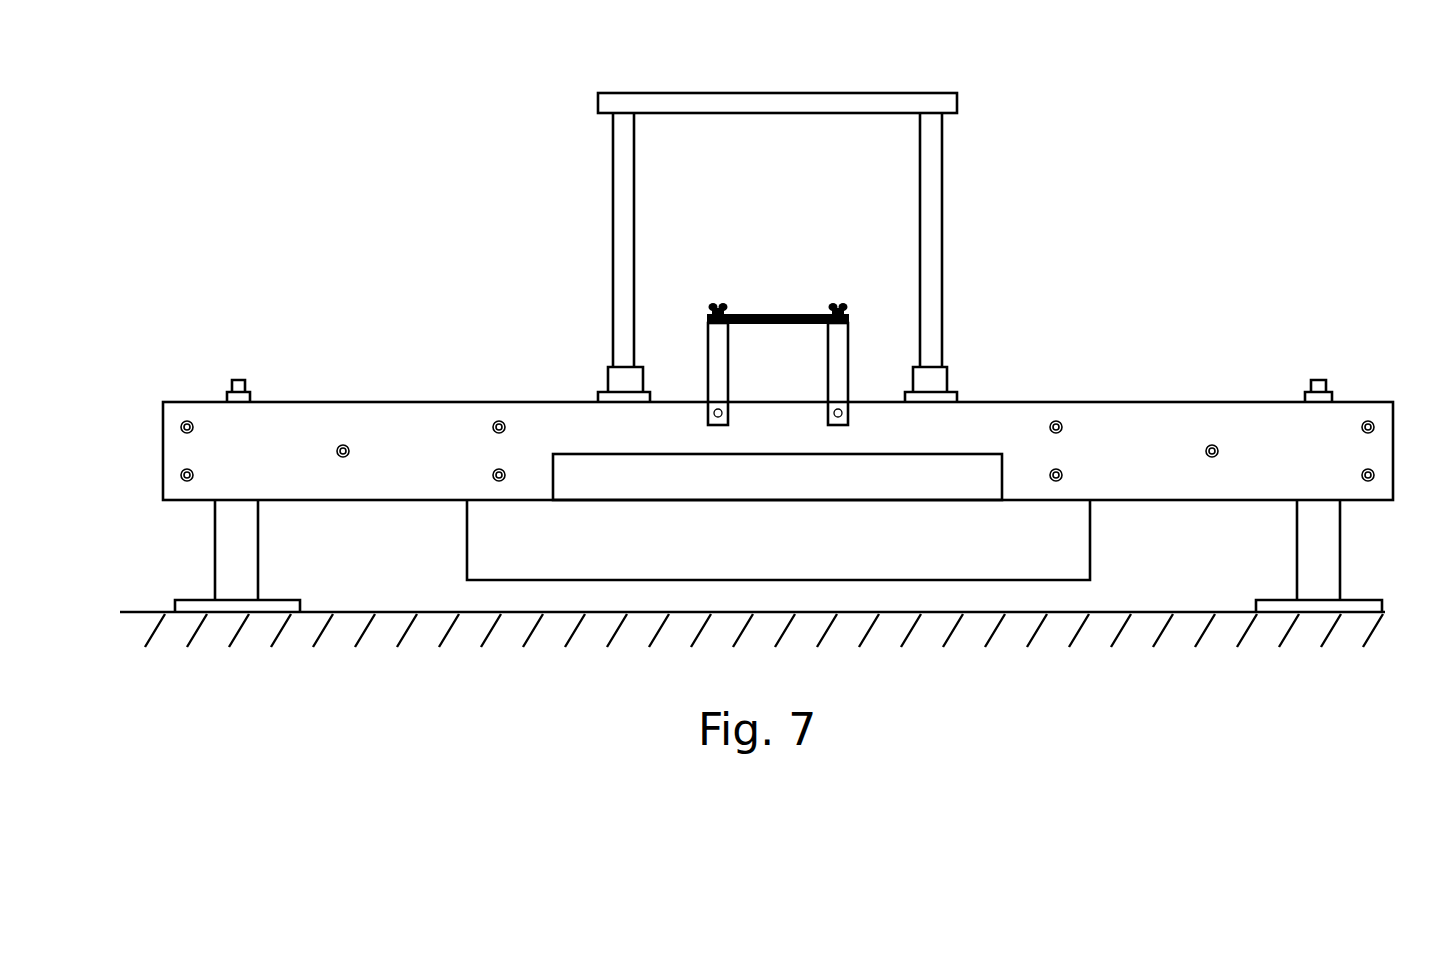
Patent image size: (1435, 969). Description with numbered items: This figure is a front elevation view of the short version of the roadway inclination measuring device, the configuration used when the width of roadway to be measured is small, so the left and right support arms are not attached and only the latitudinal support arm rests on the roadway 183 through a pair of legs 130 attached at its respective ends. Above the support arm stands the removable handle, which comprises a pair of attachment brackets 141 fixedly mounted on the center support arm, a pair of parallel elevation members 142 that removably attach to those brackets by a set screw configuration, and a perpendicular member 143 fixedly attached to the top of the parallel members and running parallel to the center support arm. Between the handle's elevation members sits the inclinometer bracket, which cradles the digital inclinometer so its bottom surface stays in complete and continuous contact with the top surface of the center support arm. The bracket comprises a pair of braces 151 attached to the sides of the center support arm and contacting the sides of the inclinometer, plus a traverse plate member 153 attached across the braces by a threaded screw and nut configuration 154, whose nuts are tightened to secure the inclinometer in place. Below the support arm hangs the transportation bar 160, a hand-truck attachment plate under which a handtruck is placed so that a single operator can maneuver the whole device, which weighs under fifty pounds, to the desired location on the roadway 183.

The legs 130 is at (237, 573).
The attachment brackets 141 is at (937, 378).
The parallel elevation members 142 is at (930, 244).
The perpendicular member 143 is at (773, 92).
The braces 151 is at (730, 428).
The traverse plate member 153 is at (772, 315).
The threaded screw and nut configuration 154 is at (838, 300).
The transportation bar 160 is at (1030, 547).
The roadway 183 is at (887, 613).